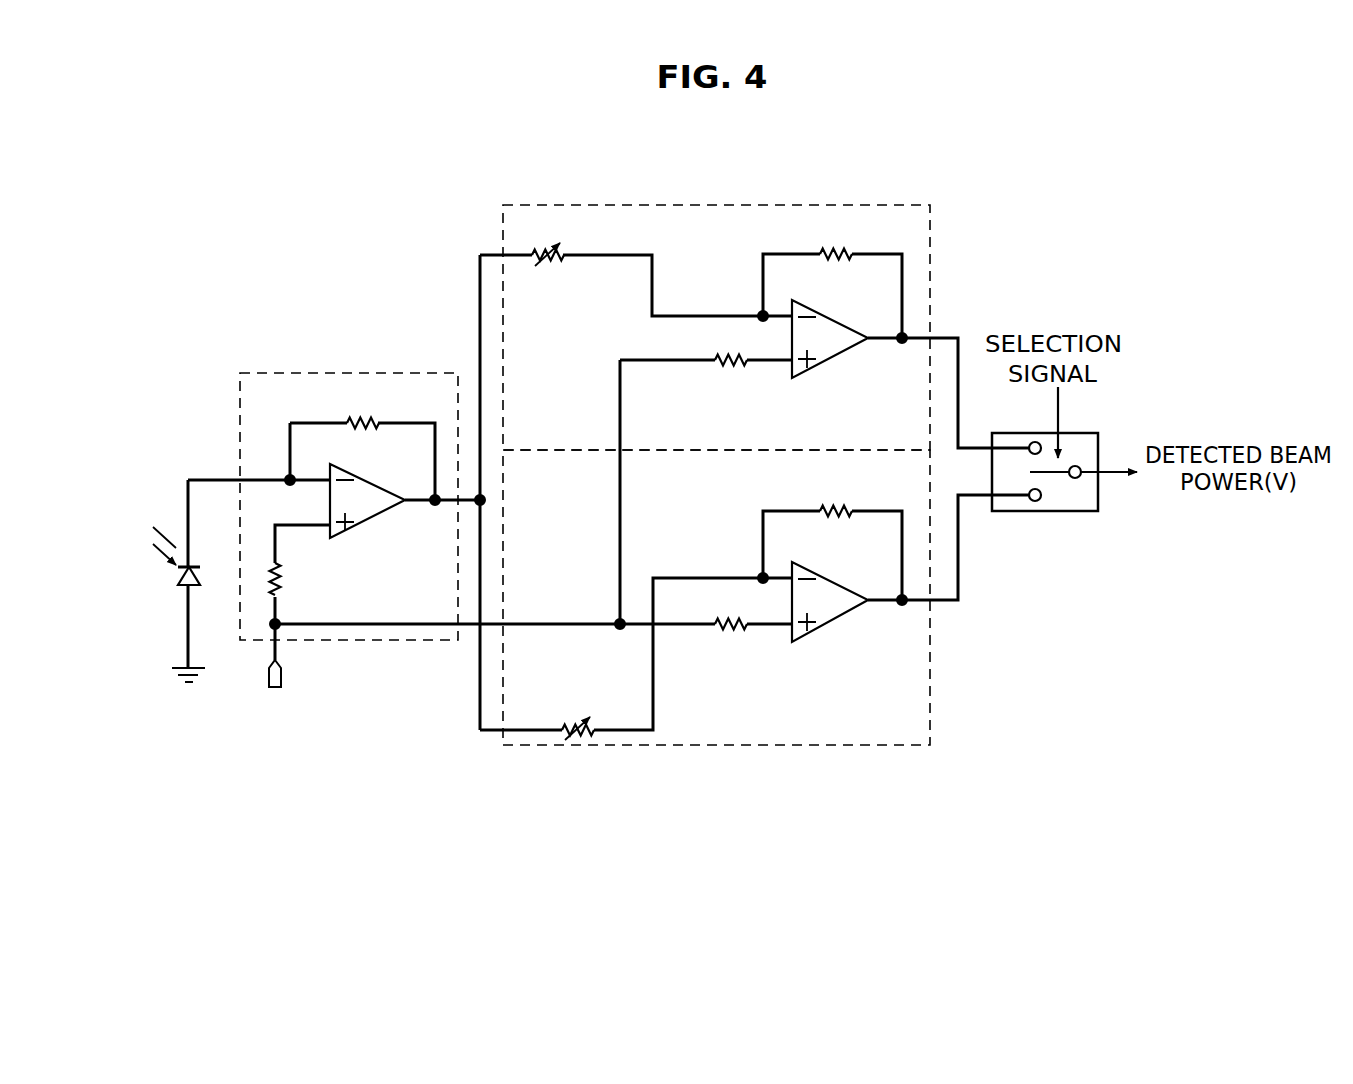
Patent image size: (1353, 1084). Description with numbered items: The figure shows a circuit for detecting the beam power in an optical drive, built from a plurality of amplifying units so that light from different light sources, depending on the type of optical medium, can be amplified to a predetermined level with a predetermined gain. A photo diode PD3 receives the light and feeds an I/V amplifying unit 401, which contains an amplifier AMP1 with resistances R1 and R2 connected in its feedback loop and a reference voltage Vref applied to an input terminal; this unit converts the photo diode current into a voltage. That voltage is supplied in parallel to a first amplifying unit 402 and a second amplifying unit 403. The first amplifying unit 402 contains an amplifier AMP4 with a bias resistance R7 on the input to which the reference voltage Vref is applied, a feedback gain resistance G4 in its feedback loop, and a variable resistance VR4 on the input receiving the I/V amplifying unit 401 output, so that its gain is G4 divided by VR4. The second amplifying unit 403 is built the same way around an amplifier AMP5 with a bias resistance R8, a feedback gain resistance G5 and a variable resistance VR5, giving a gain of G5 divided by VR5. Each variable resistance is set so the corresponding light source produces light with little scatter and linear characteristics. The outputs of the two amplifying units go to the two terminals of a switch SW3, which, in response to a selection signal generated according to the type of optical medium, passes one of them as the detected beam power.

The I/V amplifying unit 401 is at (340, 372).
The first amplifying unit 402 is at (718, 203).
The second amplifying unit 403 is at (725, 748).
The photo diode PD3 is at (161, 581).
The resistance R1 is at (294, 579).
The resistance R2 is at (363, 407).
The amplifier AMP1 is at (367, 501).
The reference voltage Vref is at (274, 691).
The variable resistance VR4 is at (636, 266).
The feedback gain resistance G4 is at (832, 279).
The bias resistance R7 is at (706, 377).
The amplifier AMP4 is at (911, 374).
The variable resistance VR5 is at (636, 659).
The feedback gain resistance G5 is at (832, 539).
The bias resistance R8 is at (730, 641).
The amplifier AMP5 is at (911, 568).
The switch SW3 is at (1064, 467).